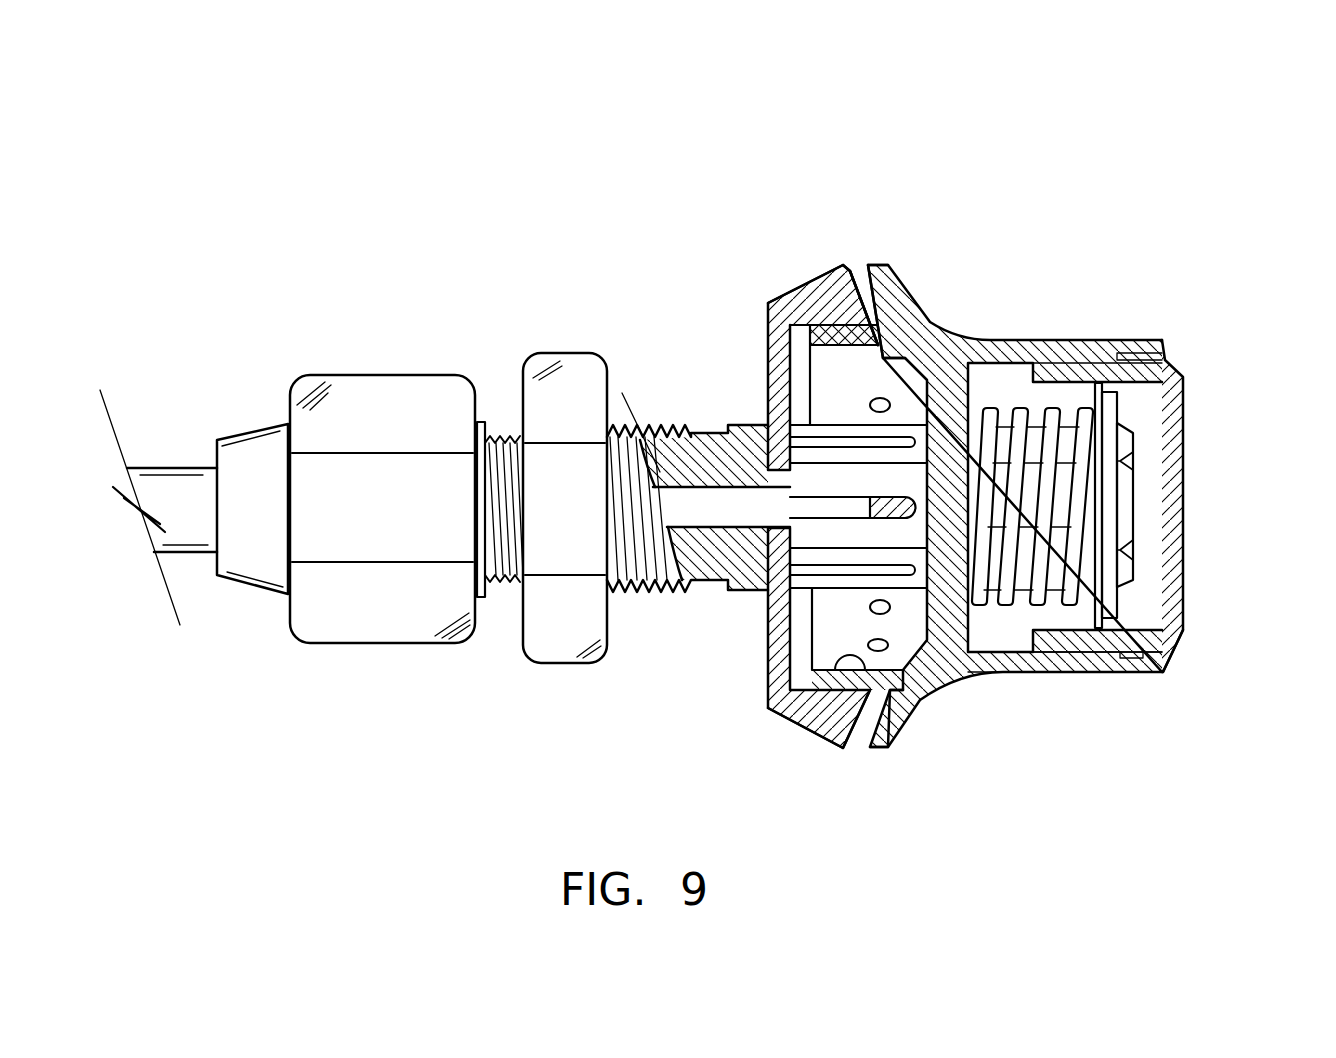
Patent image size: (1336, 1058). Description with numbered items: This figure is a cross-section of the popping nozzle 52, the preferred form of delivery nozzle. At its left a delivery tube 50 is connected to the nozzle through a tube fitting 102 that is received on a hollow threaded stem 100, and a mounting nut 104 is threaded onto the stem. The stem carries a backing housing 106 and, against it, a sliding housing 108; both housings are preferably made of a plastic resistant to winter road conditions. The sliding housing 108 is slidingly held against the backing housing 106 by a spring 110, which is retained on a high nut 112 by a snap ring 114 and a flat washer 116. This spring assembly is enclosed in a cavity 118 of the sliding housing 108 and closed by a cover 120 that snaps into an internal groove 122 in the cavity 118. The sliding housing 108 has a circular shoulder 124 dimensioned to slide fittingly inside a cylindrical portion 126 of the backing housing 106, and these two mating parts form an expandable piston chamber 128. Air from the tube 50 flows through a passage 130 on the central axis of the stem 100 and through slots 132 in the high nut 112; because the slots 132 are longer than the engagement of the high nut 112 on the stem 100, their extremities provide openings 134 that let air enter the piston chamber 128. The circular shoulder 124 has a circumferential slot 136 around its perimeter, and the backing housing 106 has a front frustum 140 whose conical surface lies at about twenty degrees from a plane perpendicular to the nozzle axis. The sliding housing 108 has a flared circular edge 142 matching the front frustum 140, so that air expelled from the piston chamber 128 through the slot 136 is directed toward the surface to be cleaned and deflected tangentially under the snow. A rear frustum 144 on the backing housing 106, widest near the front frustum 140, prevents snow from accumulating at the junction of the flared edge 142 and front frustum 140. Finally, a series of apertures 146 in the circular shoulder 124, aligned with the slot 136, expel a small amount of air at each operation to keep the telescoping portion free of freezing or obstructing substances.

The delivery tube 50 is at (178, 468).
The popping nozzle 52 is at (597, 124).
The hollow threaded stem 100 is at (641, 432).
The tube fitting 102 is at (401, 375).
The mounting nut 104 is at (556, 352).
The backing housing 106 is at (765, 342).
The sliding housing 108 is at (1000, 362).
The spring 110 is at (992, 405).
The high nut 112 is at (1125, 487).
The snap ring 114 is at (1108, 535).
The flat washer 116 is at (1093, 602).
The cavity 118 is at (1000, 640).
The cover 120 is at (1185, 613).
The internal groove 122 is at (1147, 598).
The circular shoulder 124 is at (832, 690).
The cylindrical portion 126 is at (812, 690).
The piston chamber 128 is at (825, 633).
The passage 130 is at (748, 503).
The slots 132 is at (678, 567).
The openings 134 is at (893, 497).
The circumferential slots 136 is at (883, 328).
The front frustum 140 is at (858, 266).
The flared circular edge 142 is at (877, 264).
The rear frustum 144 is at (810, 286).
The apertures 146 is at (885, 612).